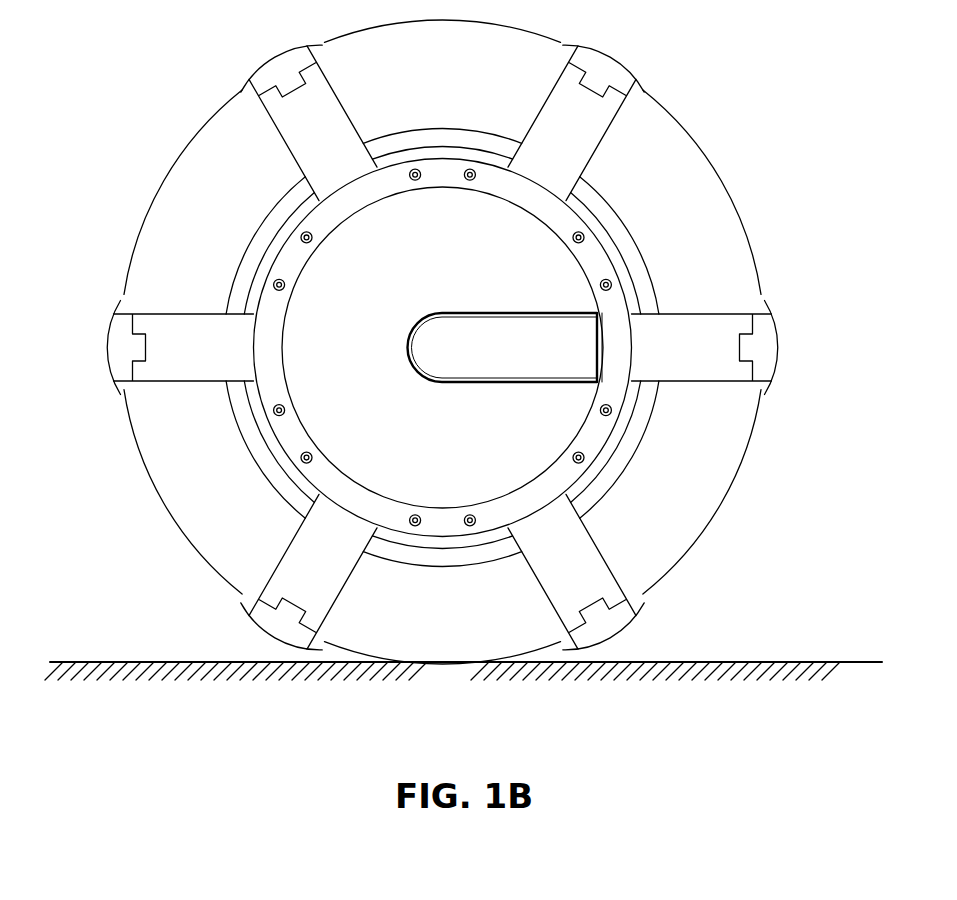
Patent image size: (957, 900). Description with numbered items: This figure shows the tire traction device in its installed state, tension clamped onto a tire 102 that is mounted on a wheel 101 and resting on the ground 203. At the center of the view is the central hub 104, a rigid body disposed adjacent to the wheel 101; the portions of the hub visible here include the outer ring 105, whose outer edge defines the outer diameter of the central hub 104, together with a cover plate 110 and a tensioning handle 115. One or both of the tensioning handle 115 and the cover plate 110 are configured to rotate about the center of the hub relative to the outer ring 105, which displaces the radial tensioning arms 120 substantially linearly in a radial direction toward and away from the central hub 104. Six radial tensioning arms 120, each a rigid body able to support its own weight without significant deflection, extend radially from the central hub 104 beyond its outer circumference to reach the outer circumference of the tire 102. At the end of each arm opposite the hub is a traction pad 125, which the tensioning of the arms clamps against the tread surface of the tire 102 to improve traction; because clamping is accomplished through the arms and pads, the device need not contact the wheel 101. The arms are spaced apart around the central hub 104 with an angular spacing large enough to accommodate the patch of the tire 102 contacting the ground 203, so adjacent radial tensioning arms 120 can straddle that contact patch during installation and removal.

The wheel 101 is at (588, 196).
The tire 102 is at (684, 149).
The central hub 104 is at (622, 277).
The outer ring 105 is at (602, 432).
The cover plate 110 is at (429, 253).
The tensioning handle 115 is at (493, 355).
The radial tensioning arms 120 is at (308, 143).
The traction pad 125 is at (776, 340).
The ground 203 is at (428, 693).